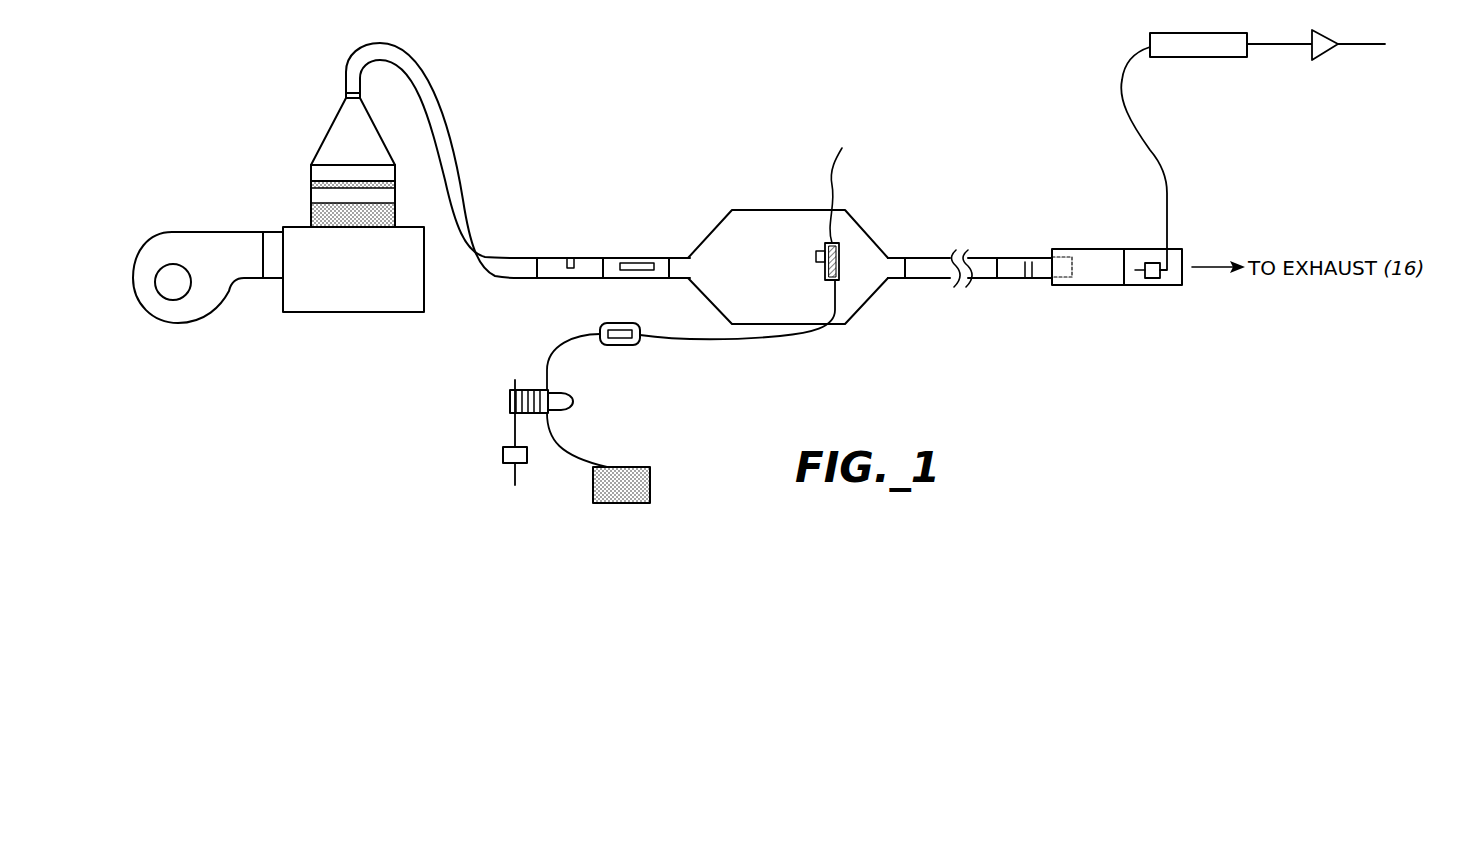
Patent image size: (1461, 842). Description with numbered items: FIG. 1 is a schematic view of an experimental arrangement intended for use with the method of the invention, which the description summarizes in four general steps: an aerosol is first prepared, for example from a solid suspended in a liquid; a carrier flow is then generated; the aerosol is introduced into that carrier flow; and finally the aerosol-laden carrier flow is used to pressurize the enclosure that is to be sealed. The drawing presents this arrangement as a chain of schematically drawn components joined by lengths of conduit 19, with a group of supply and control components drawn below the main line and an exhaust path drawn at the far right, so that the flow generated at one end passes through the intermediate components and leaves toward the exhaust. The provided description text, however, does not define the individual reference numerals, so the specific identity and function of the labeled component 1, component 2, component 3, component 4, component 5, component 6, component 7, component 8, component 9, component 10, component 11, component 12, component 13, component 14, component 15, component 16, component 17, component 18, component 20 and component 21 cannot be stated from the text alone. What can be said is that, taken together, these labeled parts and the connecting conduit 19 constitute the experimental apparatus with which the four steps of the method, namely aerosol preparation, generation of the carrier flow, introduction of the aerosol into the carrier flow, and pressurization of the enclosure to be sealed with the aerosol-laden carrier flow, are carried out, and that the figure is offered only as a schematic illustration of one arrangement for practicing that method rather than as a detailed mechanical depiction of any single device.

The housing 1 is at (310, 220).
The sensor 2 is at (584, 257).
The heater element 3 is at (836, 243).
The heating coil 4 is at (533, 390).
The flow sensor 5 is at (1153, 263).
The pump 6 is at (1190, 57).
The pump housing 7 is at (1125, 240).
The inlet duct 8 is at (262, 232).
The blower 9 is at (218, 232).
The power supply 10 is at (510, 447).
The controller 11 is at (620, 467).
The detector 12 is at (640, 262).
The signal wire 13 is at (846, 137).
The chamber 14 is at (737, 210).
The outlet conduit 15 is at (925, 256).
The sample column 16 is at (395, 184).
The orifice 17 is at (1032, 280).
The exhaust vent 18 is at (1318, 60).
The conduit 19 is at (522, 282).
The control unit 20 is at (617, 323).
The adsorbent layer 21 is at (310, 195).